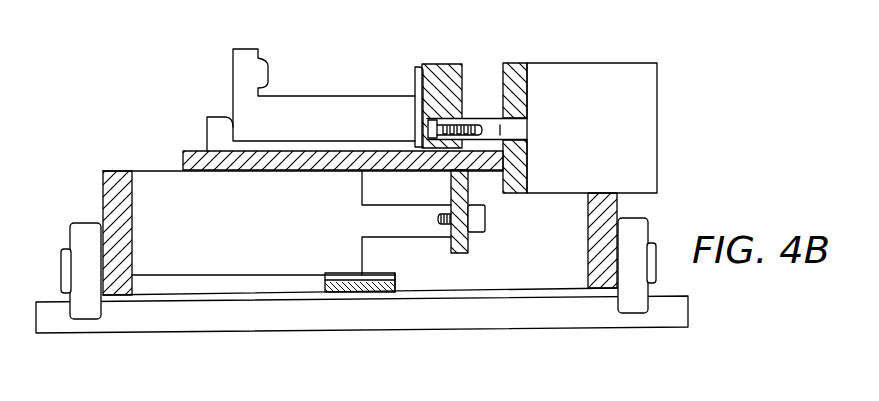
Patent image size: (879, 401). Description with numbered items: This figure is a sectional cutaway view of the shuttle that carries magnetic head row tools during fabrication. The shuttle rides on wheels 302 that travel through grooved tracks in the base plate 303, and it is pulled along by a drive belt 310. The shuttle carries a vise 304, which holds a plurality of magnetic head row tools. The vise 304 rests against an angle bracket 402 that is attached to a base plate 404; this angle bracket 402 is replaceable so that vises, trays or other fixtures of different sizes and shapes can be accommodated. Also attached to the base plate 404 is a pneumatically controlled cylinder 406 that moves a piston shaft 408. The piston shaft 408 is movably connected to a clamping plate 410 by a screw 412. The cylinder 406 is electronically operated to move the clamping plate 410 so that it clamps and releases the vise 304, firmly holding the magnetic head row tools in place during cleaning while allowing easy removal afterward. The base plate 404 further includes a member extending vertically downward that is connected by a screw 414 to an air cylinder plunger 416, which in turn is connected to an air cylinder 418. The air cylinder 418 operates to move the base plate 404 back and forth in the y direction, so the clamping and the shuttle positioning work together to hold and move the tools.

The wheels 302 is at (85, 320).
The base plate 303 is at (20, 364).
The vise 304 is at (252, 47).
The drive belt 310 is at (352, 288).
The angle bracket 402 is at (213, 115).
The base plate 404 is at (188, 150).
The cylinder 406 is at (605, 62).
The piston shaft 408 is at (463, 117).
The clamping plate 410 is at (447, 62).
The screw 412 is at (420, 97).
The screw 414 is at (475, 222).
The air cylinder plunger 416 is at (400, 230).
The air cylinder 418 is at (245, 230).